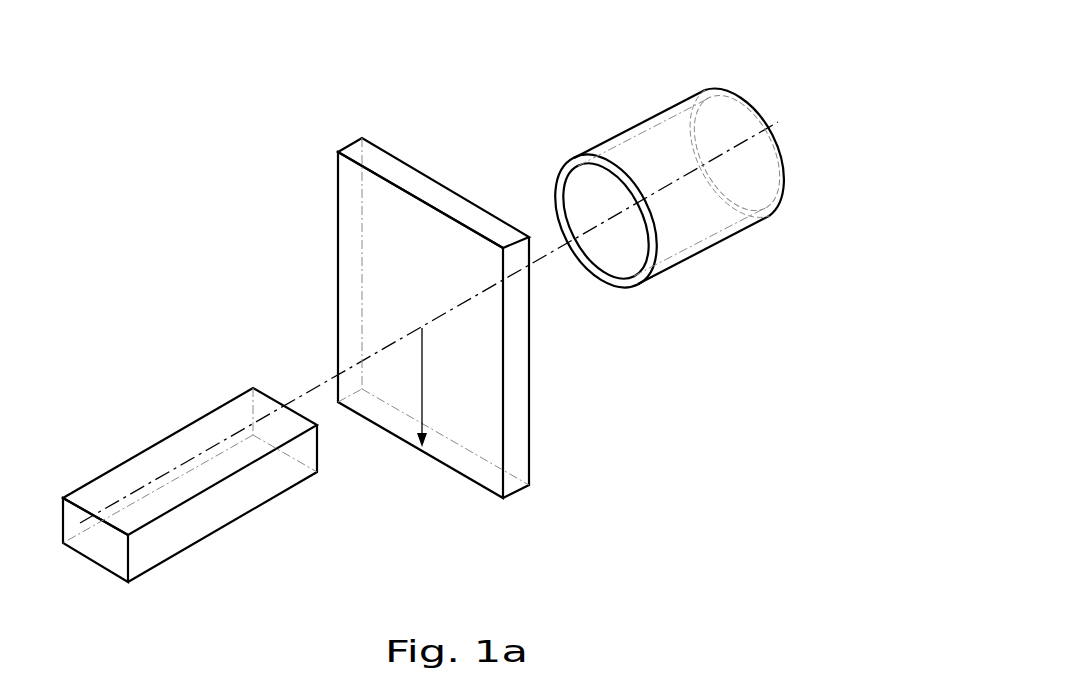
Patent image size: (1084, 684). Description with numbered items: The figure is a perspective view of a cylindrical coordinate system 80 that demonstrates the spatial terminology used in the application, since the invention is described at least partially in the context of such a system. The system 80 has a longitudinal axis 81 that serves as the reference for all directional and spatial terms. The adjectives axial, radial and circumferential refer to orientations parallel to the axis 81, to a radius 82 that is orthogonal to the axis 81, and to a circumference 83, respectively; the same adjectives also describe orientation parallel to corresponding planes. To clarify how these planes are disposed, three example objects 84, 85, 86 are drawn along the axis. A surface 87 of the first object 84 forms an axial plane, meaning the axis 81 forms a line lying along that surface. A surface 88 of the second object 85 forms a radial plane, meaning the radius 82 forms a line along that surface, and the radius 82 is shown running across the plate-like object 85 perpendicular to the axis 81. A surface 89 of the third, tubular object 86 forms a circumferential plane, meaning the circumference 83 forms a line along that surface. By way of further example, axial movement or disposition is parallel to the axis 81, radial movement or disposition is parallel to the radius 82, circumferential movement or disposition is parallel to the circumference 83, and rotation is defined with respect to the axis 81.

The cylindrical coordinate system 80 is at (286, 187).
The longitudinal axis 81 is at (771, 124).
The radius 82 is at (422, 382).
The circumference 83 is at (560, 186).
The object 84 is at (190, 516).
The object 85 is at (433, 340).
The object 86 is at (630, 191).
The surface 87 is at (148, 467).
The surface 88 is at (353, 285).
The surface 89 is at (635, 122).